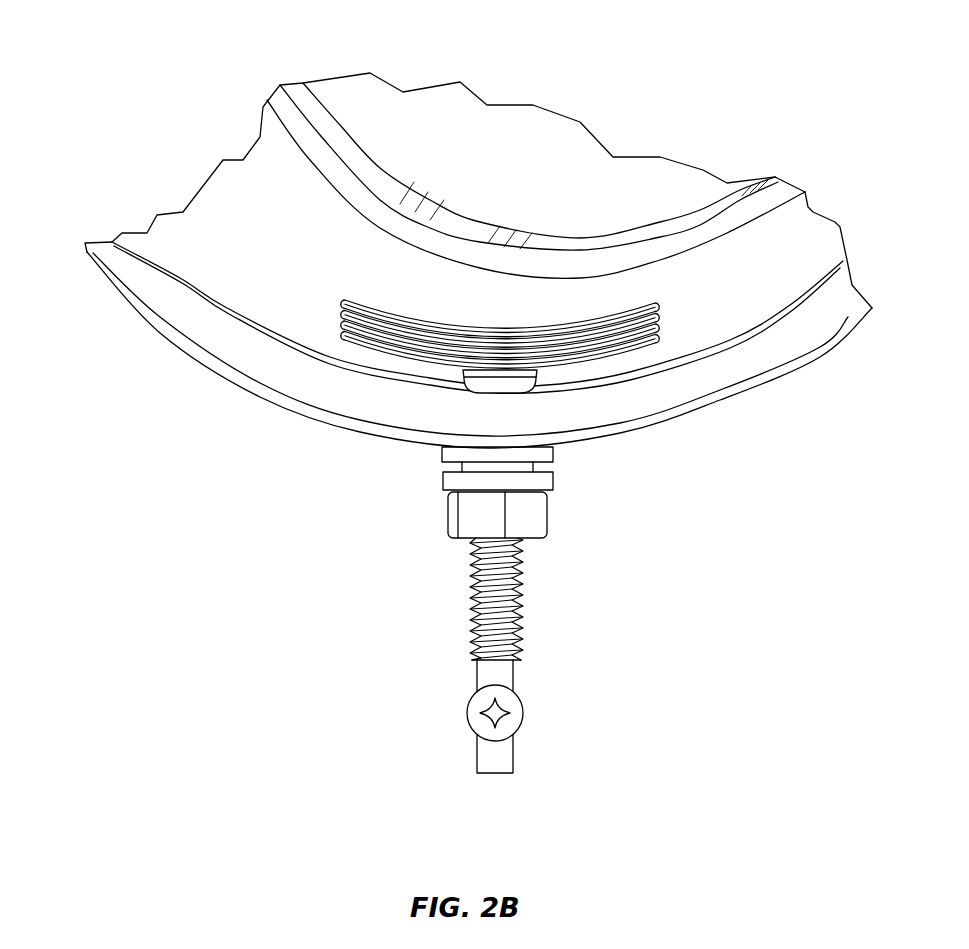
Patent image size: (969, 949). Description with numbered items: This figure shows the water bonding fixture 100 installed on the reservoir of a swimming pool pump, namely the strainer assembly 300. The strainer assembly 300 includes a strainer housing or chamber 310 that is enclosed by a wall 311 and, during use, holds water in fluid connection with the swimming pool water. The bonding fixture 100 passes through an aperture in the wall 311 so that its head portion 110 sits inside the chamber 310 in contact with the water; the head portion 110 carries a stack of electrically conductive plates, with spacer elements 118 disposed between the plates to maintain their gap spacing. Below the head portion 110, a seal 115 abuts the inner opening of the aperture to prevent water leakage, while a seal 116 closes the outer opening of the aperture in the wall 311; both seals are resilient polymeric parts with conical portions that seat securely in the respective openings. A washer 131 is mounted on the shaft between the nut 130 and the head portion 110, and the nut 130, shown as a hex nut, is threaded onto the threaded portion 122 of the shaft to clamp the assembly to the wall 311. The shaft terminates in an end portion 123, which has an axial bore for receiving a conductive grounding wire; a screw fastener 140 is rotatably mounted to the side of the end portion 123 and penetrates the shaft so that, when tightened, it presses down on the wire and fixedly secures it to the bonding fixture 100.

The strainer assembly 300 is at (317, 62).
The strainer housing 310 is at (243, 192).
The wall 311 is at (133, 260).
The bonding fixture 100 is at (402, 573).
The head portion 110 is at (500, 360).
The spacer elements 118 is at (395, 330).
The seal 115 is at (525, 390).
The seal 116 is at (473, 465).
The washer 131 is at (553, 475).
The nut 130 is at (548, 512).
The threaded portion 122 is at (515, 600).
The end portion 123 is at (475, 760).
The screw fastener 140 is at (522, 727).